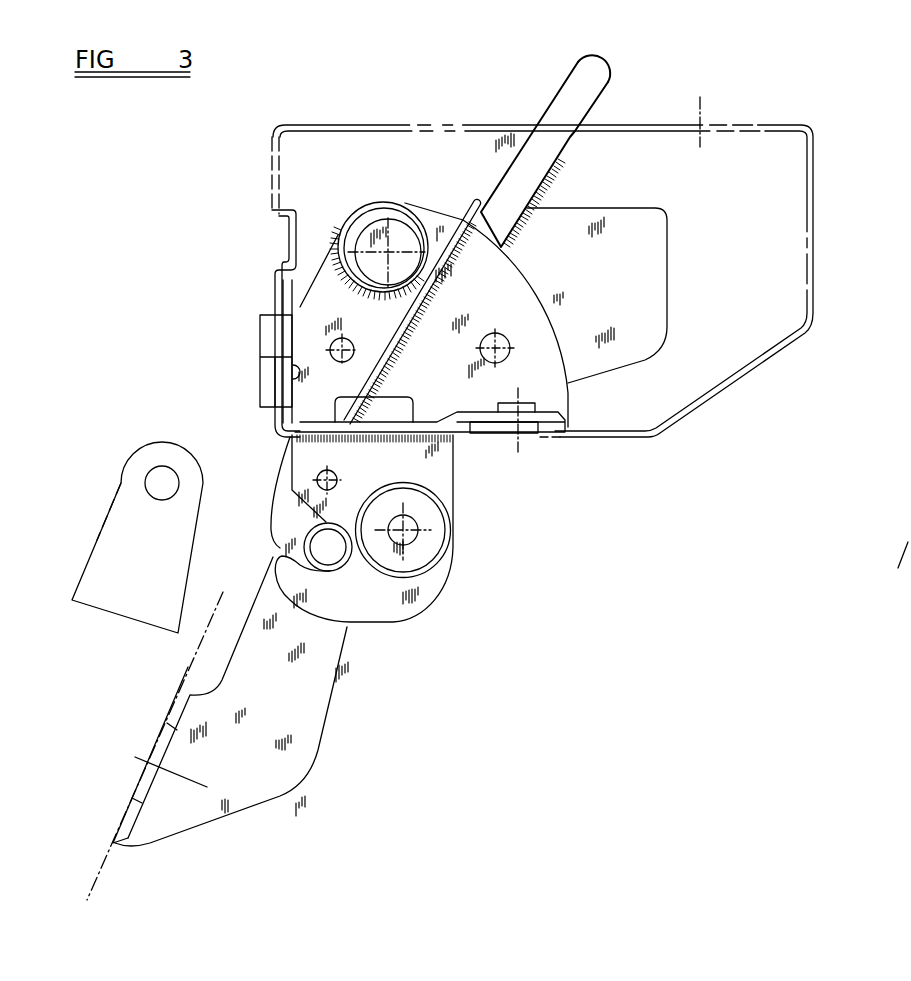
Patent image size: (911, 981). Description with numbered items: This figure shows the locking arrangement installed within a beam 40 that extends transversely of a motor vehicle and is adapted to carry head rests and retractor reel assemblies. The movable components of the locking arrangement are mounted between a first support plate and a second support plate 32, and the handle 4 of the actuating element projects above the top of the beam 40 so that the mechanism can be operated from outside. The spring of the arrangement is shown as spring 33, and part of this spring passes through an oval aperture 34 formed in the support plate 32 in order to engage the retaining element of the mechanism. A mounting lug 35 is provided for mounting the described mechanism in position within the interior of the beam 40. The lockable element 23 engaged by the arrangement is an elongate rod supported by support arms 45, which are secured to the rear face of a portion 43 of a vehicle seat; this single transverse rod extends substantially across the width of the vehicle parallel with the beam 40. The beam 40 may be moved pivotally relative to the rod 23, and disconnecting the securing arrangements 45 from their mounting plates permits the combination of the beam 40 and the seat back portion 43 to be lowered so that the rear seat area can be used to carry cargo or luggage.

The handle 4 is at (588, 90).
The lockable element 23 is at (145, 483).
The second support plate 32 is at (380, 610).
The spring 33 is at (372, 203).
The oval aperture 34 is at (402, 397).
The mounting lug 35 is at (538, 433).
The beam 40 is at (813, 250).
The portion of vehicle seat 43 is at (110, 847).
The support arms 45 is at (263, 780).